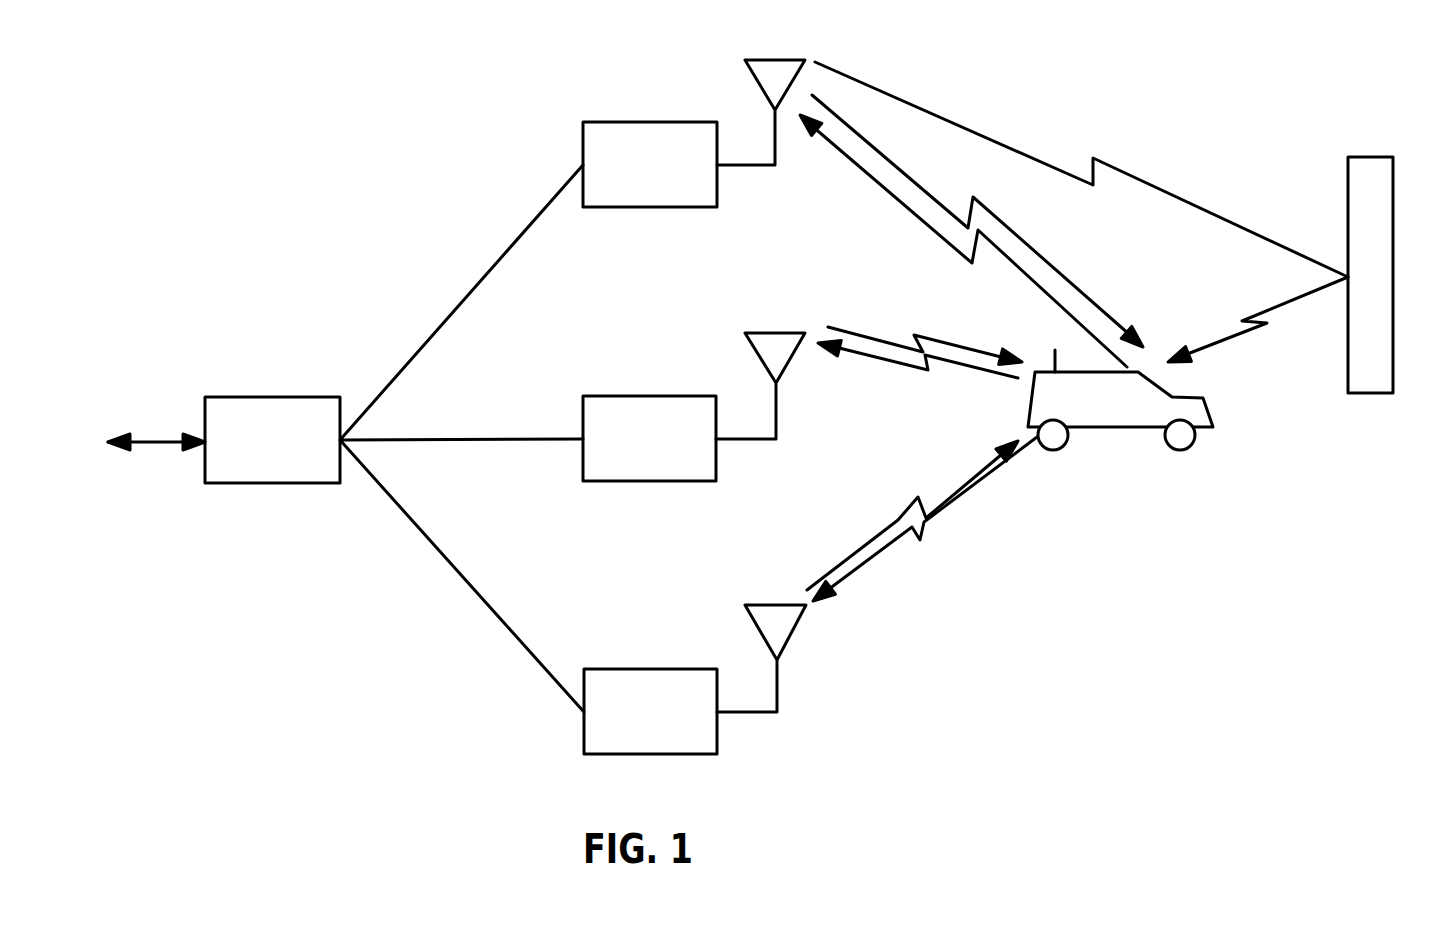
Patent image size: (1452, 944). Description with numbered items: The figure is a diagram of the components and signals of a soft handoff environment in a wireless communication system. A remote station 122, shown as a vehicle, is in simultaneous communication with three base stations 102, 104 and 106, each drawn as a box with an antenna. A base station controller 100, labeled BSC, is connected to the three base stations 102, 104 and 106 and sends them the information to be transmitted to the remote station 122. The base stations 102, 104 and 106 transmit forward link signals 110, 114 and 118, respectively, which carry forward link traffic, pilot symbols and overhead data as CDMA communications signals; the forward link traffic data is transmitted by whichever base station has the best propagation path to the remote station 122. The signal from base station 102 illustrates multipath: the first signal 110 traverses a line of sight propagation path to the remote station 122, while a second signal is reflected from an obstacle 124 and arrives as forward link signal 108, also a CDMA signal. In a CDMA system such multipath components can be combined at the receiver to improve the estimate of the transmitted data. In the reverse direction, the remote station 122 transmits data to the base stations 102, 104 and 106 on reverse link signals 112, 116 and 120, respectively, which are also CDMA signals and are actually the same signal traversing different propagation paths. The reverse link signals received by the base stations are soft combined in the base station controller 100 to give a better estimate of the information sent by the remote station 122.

The base station controller 100 is at (265, 397).
The base station 102 is at (635, 122).
The base station 104 is at (635, 396).
The base station 106 is at (637, 669).
The multipath component signal 108 is at (912, 103).
The forward link signal 110 is at (1040, 256).
The reverse link signal 112 is at (907, 209).
The forward link signal 114 is at (932, 334).
The reverse link signal 116 is at (915, 367).
The forward link signal 118 is at (900, 515).
The reverse link signal 120 is at (935, 524).
The remote station 122 is at (1212, 410).
The obstacle 124 is at (1365, 157).